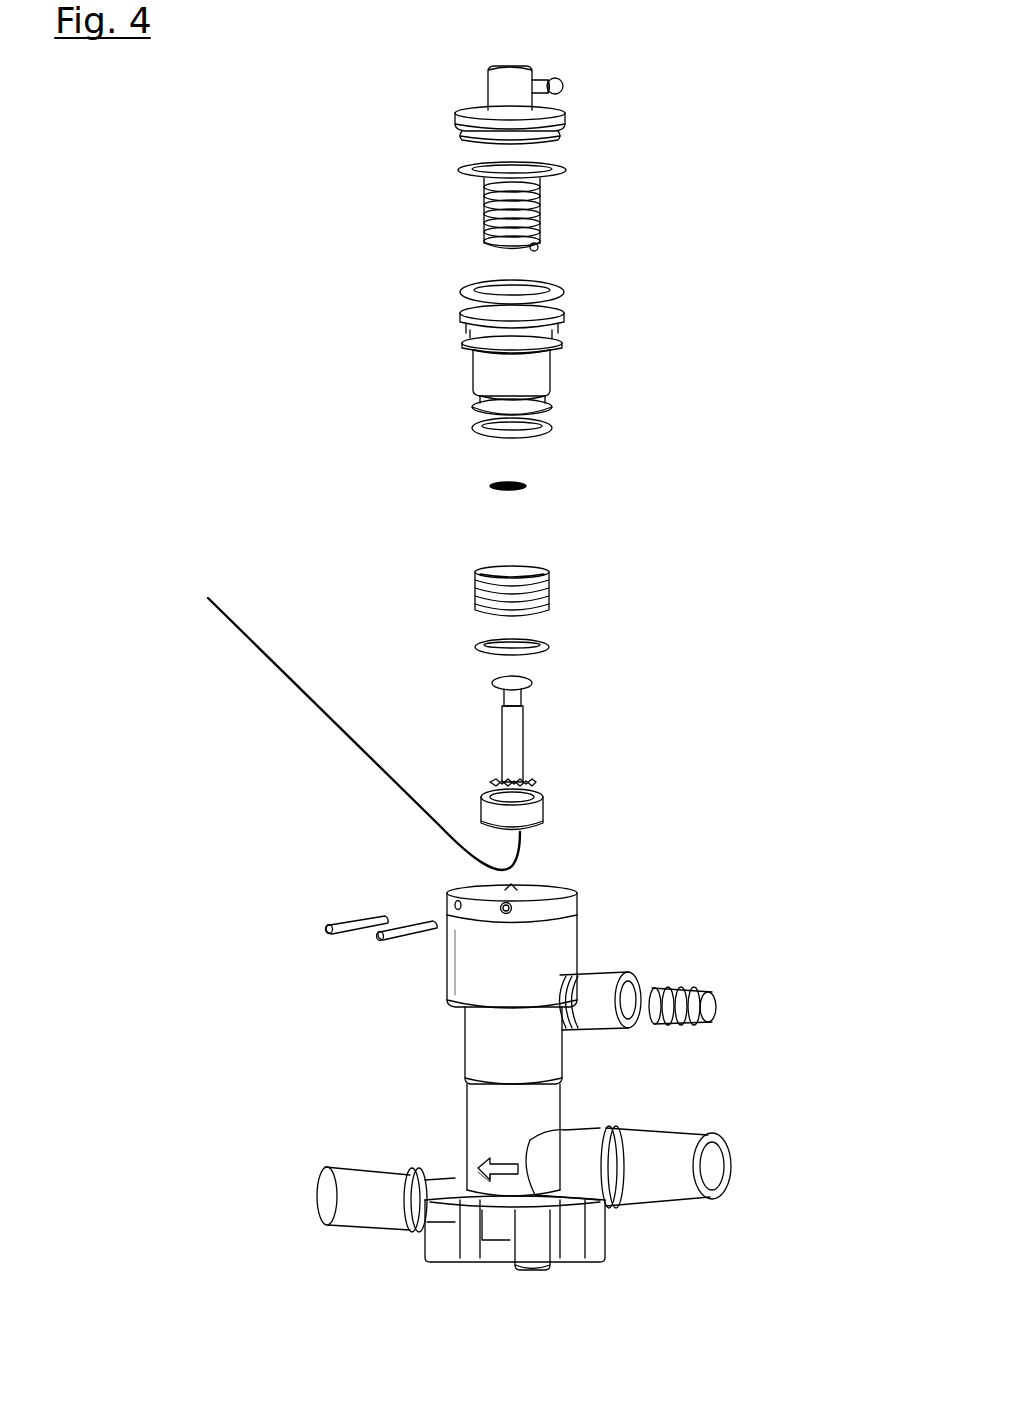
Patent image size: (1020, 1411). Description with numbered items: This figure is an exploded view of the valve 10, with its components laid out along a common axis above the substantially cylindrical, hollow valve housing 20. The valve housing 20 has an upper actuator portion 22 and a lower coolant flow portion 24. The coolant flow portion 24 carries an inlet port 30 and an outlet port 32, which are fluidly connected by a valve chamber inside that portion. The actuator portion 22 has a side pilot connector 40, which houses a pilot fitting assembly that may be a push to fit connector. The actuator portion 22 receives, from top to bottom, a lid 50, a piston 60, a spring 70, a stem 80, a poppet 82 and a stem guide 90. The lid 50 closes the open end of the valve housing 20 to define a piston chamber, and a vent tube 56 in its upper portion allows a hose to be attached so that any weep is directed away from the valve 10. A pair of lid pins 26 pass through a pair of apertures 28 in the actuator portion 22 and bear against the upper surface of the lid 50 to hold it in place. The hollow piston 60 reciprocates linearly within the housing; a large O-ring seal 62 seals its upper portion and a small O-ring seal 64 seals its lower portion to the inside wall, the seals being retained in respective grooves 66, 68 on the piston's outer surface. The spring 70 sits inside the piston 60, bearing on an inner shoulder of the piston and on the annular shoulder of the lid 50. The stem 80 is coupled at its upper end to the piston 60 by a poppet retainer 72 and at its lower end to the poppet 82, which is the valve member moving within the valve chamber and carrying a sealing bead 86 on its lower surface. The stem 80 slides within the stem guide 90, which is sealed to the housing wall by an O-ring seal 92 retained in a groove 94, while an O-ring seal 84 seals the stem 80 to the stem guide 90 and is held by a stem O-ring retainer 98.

The valve 10 is at (796, 165).
The valve housing 20 is at (552, 940).
The actuator portion 22 is at (470, 972).
The coolant flow portion 24 is at (477, 1115).
The lid pins 26 is at (408, 920).
The apertures 28 is at (506, 905).
The inlet port 30 is at (652, 1170).
The outlet port 32 is at (362, 1200).
The pilot connector 40 is at (640, 975).
The lid 50 is at (514, 66).
The vent tube 56 is at (560, 83).
The piston 60 is at (553, 367).
The large O-ring seal 62 is at (564, 290).
The small O-ring seal 64 is at (553, 430).
The groove 66 is at (468, 328).
The groove 68 is at (480, 398).
The spring 70 is at (538, 210).
The poppet retainer 72 is at (528, 486).
The stem 80 is at (524, 732).
The poppet 82 is at (545, 815).
The O-ring seal 84 is at (535, 683).
The sealing bead 86 is at (353, 718).
The stem guide 90 is at (553, 590).
The O-ring seal 92 is at (552, 647).
The groove 94 is at (478, 603).
The stem O-ring retainer 98 is at (537, 782).